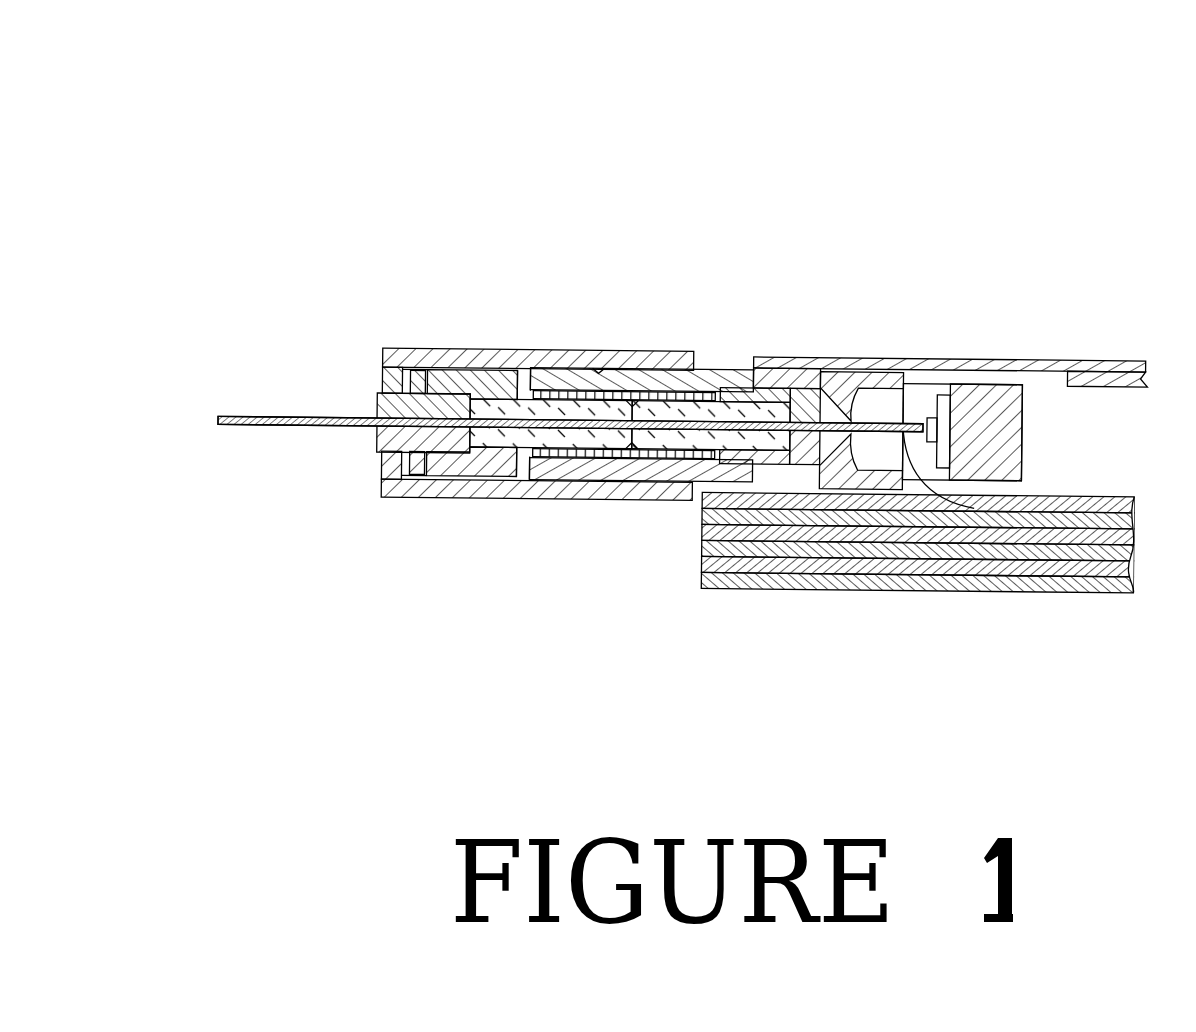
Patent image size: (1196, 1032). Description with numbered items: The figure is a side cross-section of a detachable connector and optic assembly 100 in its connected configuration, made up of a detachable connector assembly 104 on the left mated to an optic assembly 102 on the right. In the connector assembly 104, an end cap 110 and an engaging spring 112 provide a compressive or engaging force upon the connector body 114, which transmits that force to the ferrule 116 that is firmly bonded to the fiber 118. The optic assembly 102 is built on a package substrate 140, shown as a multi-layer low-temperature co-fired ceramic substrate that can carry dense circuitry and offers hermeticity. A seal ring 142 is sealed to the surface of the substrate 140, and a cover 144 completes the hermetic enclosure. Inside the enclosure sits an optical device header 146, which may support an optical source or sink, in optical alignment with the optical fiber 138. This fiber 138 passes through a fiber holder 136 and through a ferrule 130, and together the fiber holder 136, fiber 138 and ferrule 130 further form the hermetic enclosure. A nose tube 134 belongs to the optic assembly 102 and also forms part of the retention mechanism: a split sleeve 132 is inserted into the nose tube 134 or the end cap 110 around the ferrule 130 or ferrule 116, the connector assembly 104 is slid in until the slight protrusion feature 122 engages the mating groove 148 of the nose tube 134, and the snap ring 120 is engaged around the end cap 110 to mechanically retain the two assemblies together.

The detachable connector and optic assembly 100 is at (378, 100).
The optic assembly 102 is at (1088, 184).
The detachable connector assembly 104 is at (238, 655).
The end cap 110 is at (463, 350).
The engaging spring 112 is at (413, 470).
The connector body 114 is at (382, 393).
The ferrule 116 is at (500, 440).
The fiber 118 is at (220, 423).
The snap ring 120 is at (662, 350).
The protrusion feature 122 is at (598, 368).
The ferrule 130 is at (767, 445).
The split sleeve 132 is at (707, 458).
The nose tube 134 is at (713, 395).
The fiber holder 136 is at (853, 375).
The optical fiber 138 is at (1000, 497).
The package substrate 140 is at (907, 565).
The seal ring 142 is at (787, 380).
The cover 144 is at (985, 365).
The optical device header 146 is at (1023, 417).
The mating groove 148 is at (535, 368).